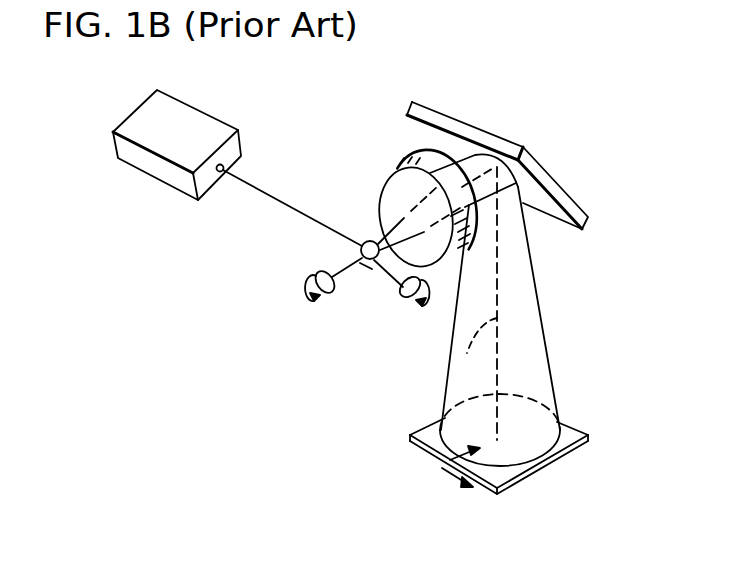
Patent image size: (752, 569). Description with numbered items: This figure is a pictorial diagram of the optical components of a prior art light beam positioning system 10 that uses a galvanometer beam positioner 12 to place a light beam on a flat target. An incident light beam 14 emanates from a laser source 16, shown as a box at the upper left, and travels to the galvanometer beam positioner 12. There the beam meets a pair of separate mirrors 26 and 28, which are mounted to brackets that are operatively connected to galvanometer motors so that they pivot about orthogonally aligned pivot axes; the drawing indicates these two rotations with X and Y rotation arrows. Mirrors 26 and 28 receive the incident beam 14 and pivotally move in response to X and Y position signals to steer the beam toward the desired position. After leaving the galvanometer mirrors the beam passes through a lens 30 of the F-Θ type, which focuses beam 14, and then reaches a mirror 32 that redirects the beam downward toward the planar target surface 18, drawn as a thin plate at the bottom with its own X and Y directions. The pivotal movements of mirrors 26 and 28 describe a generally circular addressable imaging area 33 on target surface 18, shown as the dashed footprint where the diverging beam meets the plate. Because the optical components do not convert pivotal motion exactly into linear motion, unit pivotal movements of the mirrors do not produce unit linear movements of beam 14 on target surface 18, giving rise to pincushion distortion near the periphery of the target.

The light beam positioning system 10 is at (372, 345).
The galvanometer beam positioner 12 is at (331, 254).
The incident light beam 14 is at (282, 198).
The laser source 16 is at (195, 123).
The planar target surface 18 is at (510, 472).
The galvanometer mirror 26 is at (366, 241).
The galvanometer mirror 28 is at (363, 268).
The lens 30 is at (398, 166).
The mirror 32 is at (480, 135).
The addressable imaging area 33 is at (527, 403).